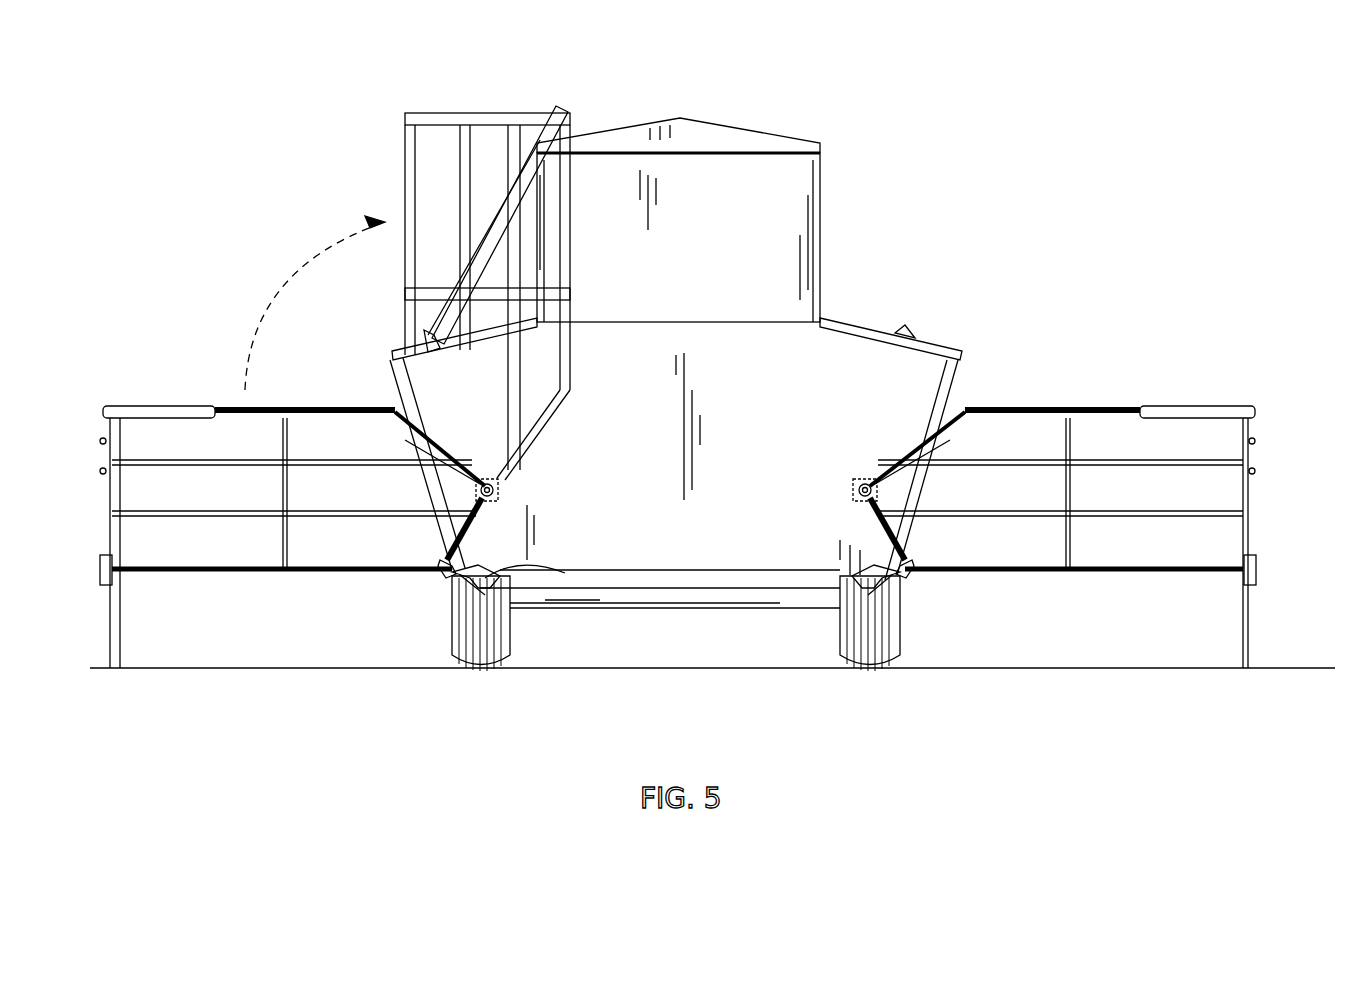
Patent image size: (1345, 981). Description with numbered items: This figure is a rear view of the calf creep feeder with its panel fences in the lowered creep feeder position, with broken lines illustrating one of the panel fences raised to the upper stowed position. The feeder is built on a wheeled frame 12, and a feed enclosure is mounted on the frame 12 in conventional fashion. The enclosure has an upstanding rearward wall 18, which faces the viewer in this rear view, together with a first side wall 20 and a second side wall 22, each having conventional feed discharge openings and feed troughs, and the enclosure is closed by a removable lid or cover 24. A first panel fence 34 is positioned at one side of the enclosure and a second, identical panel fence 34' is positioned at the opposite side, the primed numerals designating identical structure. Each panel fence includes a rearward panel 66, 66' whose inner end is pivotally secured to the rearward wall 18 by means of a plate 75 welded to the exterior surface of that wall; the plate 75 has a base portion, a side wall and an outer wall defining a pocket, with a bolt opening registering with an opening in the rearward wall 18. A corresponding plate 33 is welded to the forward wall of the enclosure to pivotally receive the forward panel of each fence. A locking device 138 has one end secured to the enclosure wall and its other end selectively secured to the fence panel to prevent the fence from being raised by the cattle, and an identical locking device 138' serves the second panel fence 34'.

The wheeled frame 12 is at (826, 606).
The rearward wall 18 is at (673, 540).
The first side wall 20 is at (824, 196).
The second side wall 22 is at (524, 218).
The removable lid or cover 24 is at (752, 130).
The plate 33 is at (857, 470).
The first panel fence 34 is at (1116, 515).
The second panel fence 34' is at (276, 537).
The rearward panel 66 is at (1109, 511).
The rearward panel 66' is at (294, 552).
The plate 75 is at (508, 474).
The locking device 138 is at (929, 596).
The locking device 138' is at (532, 609).